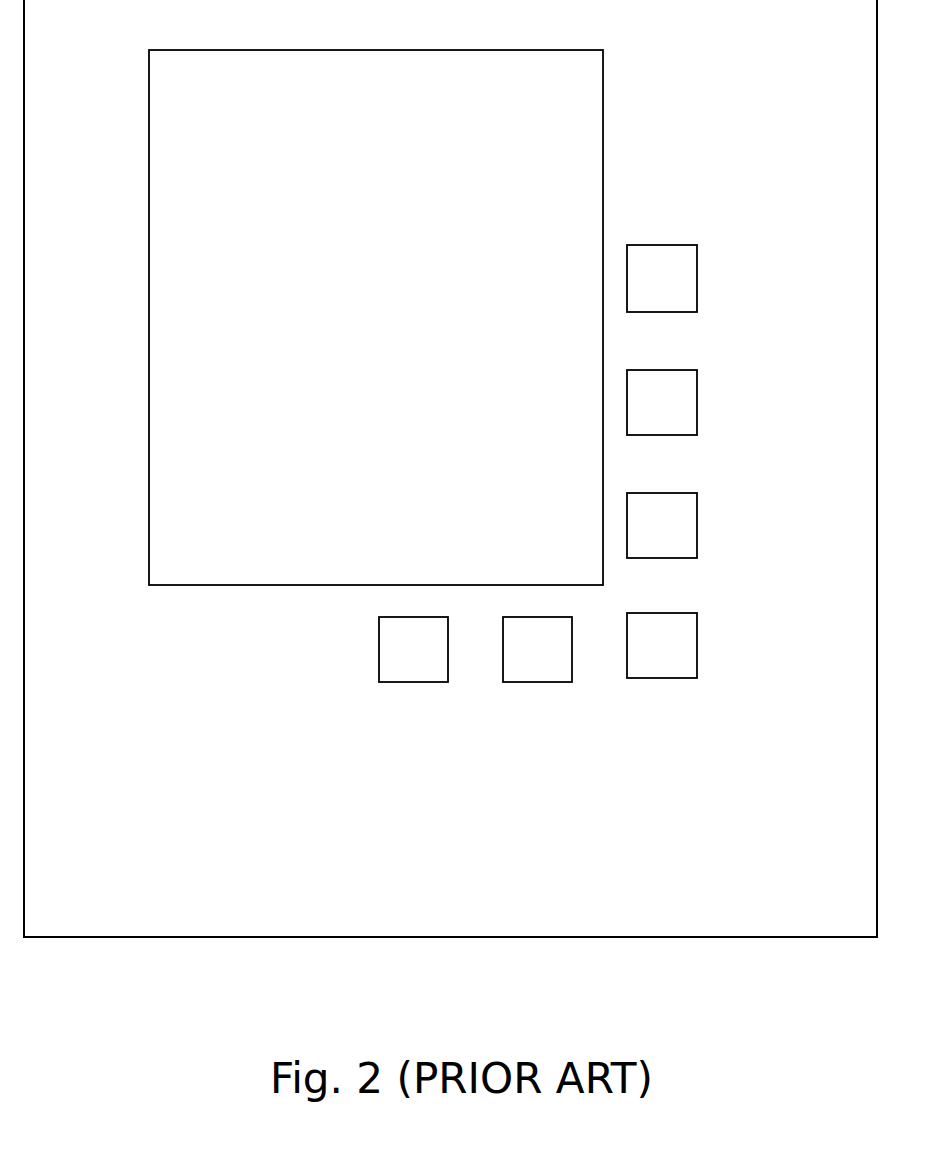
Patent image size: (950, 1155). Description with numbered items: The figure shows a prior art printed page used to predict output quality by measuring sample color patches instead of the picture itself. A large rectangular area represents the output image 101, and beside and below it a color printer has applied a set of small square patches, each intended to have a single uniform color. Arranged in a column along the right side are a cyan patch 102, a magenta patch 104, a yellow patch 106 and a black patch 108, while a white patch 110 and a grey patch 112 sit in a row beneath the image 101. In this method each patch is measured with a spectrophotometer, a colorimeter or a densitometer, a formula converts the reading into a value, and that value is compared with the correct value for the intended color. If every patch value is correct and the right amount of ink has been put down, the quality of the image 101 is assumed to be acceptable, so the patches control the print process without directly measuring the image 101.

The output image 101 is at (588, 125).
The cyan patch 102 is at (709, 185).
The magenta patch 104 is at (683, 408).
The yellow patch 106 is at (692, 527).
The black patch 108 is at (683, 657).
The white patch 110 is at (545, 672).
The grey patch 112 is at (395, 665).